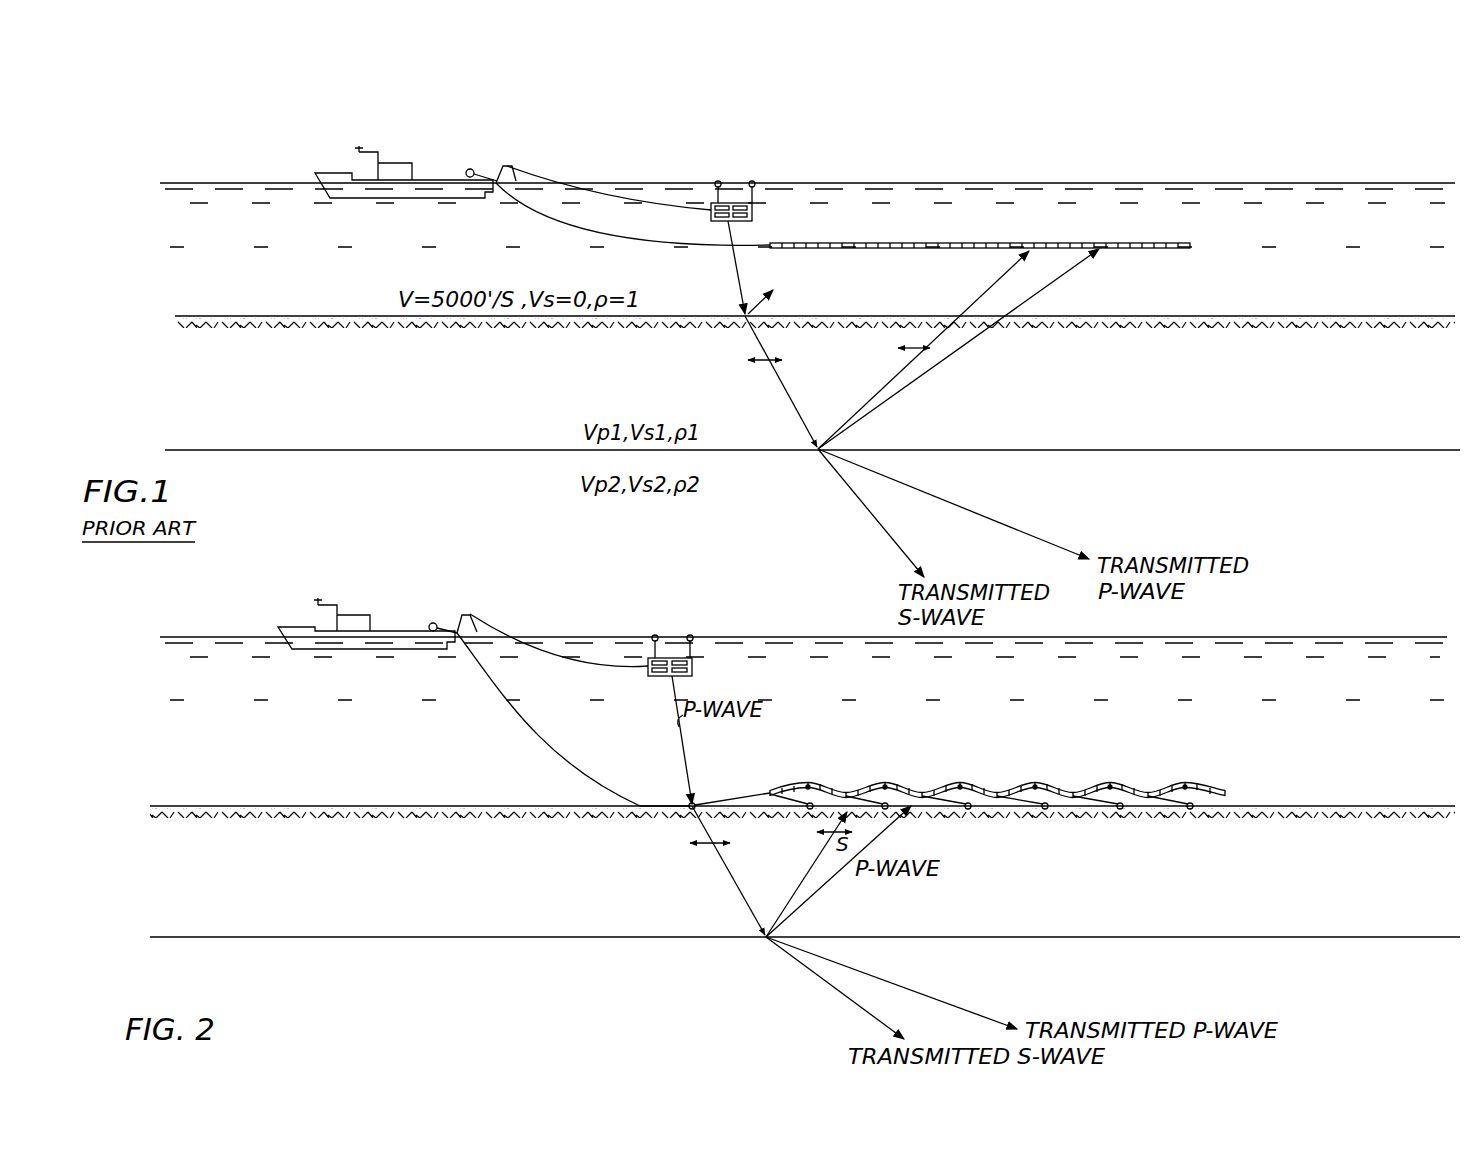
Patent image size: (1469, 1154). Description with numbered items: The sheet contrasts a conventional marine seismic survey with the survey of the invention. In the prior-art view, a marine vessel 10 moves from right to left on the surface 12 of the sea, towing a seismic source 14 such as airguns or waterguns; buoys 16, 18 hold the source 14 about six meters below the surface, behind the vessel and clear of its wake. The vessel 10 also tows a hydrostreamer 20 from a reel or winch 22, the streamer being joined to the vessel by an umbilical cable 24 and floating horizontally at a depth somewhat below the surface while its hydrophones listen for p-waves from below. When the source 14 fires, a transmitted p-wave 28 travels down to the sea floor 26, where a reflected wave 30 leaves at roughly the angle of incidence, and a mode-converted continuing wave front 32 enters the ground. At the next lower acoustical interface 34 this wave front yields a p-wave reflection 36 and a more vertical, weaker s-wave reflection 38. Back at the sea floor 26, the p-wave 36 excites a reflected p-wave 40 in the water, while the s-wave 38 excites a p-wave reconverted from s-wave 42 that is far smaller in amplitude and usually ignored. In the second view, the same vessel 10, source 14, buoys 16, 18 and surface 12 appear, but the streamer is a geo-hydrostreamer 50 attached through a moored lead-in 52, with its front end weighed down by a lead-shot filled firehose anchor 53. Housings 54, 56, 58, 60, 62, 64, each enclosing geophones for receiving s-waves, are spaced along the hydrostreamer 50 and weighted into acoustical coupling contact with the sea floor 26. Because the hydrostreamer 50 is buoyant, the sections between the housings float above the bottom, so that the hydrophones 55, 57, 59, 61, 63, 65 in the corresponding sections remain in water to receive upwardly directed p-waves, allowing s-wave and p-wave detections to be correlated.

In FIG. 1, the marine vessel 10 is at (439, 200).
In FIG. 2, the marine vessel 10 is at (409, 625).
In FIG. 1, the surface of the sea 12 is at (977, 182).
In FIG. 2, the surface of the sea 12 is at (778, 635).
In FIG. 1, the seismic source 14 is at (753, 211).
In FIG. 2, the seismic source 14 is at (693, 666).
In FIG. 1, the buoy 16 is at (718, 181).
In FIG. 2, the buoy 16 is at (655, 635).
In FIG. 1, the buoy 18 is at (752, 181).
In FIG. 2, the buoy 18 is at (690, 635).
In FIG. 1, the hydrostreamer 20 is at (915, 243).
In FIG. 1, the reel or winch 22 is at (469, 169).
In FIG. 1, the umbilical cable 24 is at (638, 240).
In FIG. 1, the sea floor 26 is at (302, 314).
In FIG. 2, the sea floor 26 is at (298, 804).
In FIG. 1, the transmitted p-wave 28 is at (731, 267).
In FIG. 1, the reflected wave 30 is at (768, 302).
In FIG. 1, the continuing wave front 32 is at (780, 395).
In FIG. 1, the acoustical interface 34 is at (440, 448).
In FIG. 2, the acoustical interface 34 is at (455, 935).
In FIG. 1, the p-wave reflection 36 is at (906, 393).
In FIG. 1, the s-wave reflection 38 is at (876, 379).
In FIG. 1, the reflected p-wave 40 is at (1076, 270).
In FIG. 1, the p-wave reconverted from s-wave 42 is at (1010, 270).
In FIG. 2, the hydrostreamer 50 is at (1212, 789).
In FIG. 2, the moored lead-in 52 is at (509, 720).
In FIG. 2, the anchor lead-shot filled firehose 53 is at (634, 808).
In FIG. 2, the housing 54 is at (808, 809).
In FIG. 2, the hydrophone 55 is at (808, 785).
In FIG. 2, the housing 56 is at (886, 809).
In FIG. 2, the hydrophone 57 is at (885, 785).
In FIG. 2, the housing 58 is at (969, 809).
In FIG. 2, the hydrophone 59 is at (960, 785).
In FIG. 2, the housing 60 is at (1046, 809).
In FIG. 2, the hydrophone 61 is at (1035, 785).
In FIG. 2, the housing 62 is at (1120, 809).
In FIG. 2, the hydrophone 63 is at (1110, 785).
In FIG. 2, the housing 64 is at (1190, 809).
In FIG. 2, the hydrophone 65 is at (1187, 785).